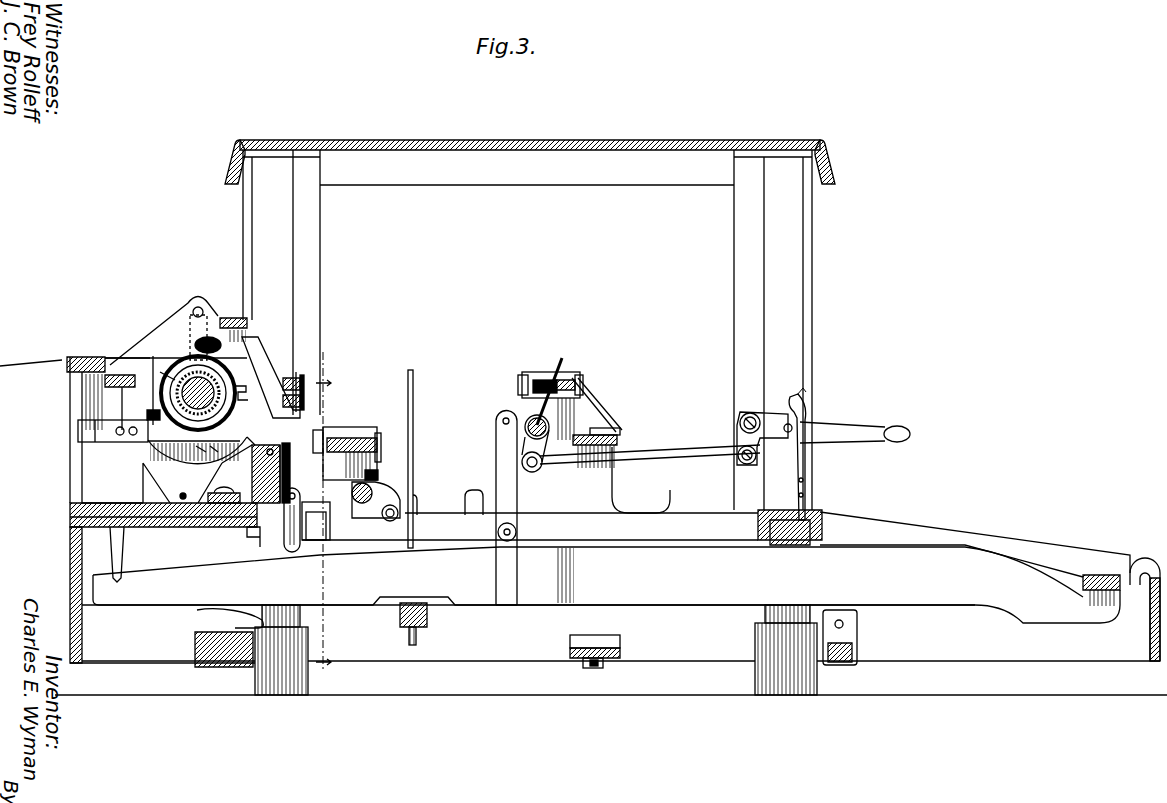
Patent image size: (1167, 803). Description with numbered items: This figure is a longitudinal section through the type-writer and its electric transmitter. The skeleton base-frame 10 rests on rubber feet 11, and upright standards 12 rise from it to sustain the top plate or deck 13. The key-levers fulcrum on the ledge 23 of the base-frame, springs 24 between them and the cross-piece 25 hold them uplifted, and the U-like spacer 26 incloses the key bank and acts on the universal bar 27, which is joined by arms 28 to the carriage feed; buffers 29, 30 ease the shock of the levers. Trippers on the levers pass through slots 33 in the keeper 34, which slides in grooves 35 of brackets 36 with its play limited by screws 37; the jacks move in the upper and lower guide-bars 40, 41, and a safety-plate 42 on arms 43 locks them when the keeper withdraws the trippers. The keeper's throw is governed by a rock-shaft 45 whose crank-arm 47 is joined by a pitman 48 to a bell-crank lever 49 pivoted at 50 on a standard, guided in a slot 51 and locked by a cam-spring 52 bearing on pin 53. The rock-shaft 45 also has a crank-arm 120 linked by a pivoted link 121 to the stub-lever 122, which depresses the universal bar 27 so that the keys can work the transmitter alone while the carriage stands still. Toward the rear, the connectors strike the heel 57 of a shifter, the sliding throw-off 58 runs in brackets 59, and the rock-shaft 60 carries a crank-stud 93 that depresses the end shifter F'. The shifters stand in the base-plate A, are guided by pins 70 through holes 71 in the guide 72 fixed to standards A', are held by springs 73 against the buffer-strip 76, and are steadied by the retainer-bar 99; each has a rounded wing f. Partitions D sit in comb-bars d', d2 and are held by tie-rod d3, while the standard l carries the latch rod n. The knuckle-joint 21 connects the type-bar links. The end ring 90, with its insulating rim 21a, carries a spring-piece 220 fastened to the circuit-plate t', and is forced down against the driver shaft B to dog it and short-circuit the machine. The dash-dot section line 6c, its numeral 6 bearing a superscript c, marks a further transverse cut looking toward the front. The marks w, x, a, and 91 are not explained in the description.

The top plate or deck 13 is at (440, 140).
The upright standards 12 is at (527, 330).
The skeleton base-frame 10 is at (70, 571).
The U-like spacer 26 is at (606, 585).
The rubber plugs or feet 11 is at (536, 650).
The buffer 29 is at (786, 546).
The buffer 30 is at (856, 642).
The lower guide-bar 41 is at (578, 660).
The universal bar 27 is at (428, 620).
The arms 28 is at (414, 438).
The cross-piece 25 is at (238, 667).
The springs 24 is at (212, 612).
The fulcrum-ledge 23 is at (125, 545).
The springs 73 is at (291, 553).
The retainer-bar 99 is at (316, 521).
The crank-stud 93 is at (385, 540).
The slots 33 is at (390, 522).
The heel 57 is at (376, 509).
The rock-shaft 60 is at (378, 483).
The brackets 59 is at (347, 453).
The sliding throw-off 58 is at (365, 438).
The buffer-strip 76 is at (305, 398).
The holes 71 is at (305, 392).
The transverse guide 72 is at (305, 386).
The guide-pins 70 is at (287, 386).
The section line 6c is at (326, 513).
The section line 6 is at (326, 513).
The brackets 36 is at (541, 481).
The pivoted link 121 is at (500, 466).
The stub-lever 122 is at (477, 585).
The crank-arm 120 is at (494, 422).
The crank-arm 47 is at (540, 470).
The rock-shaft 45 is at (549, 427).
The screws 37 is at (520, 376).
The cross-plate or keeper 34 is at (583, 385).
The grooves or ways 35 is at (541, 378).
The arms 43 is at (600, 408).
The safety-plate 42 is at (622, 432).
The upper guide-bar 40 is at (620, 440).
The pitman 48 is at (680, 458).
The pivot 50 is at (738, 423).
The pin 53 is at (787, 433).
The cam-spring 52 is at (806, 412).
The slot 51 is at (808, 402).
The bell-crank lever 49 is at (838, 434).
The knuckle-joint 21 is at (198, 408).
The insulating rim 21a is at (236, 366).
The spring-piece 220 is at (108, 372).
The comb-bar d2 is at (118, 373).
The rod 91 is at (149, 401).
The end ring 90 is at (165, 369).
The bracket w is at (200, 305).
The comb-bar d' is at (233, 306).
The cam x is at (195, 345).
The partitions D is at (190, 340).
The driver B is at (162, 442).
The lug a is at (201, 450).
The wing f is at (227, 423).
The standards A' is at (98, 437).
The base-plate A is at (112, 495).
The shifter F' is at (239, 442).
The rod n is at (273, 452).
The standard l is at (272, 470).
The tie-rod d3 is at (183, 498).
The circuit-plate t' is at (31, 373).